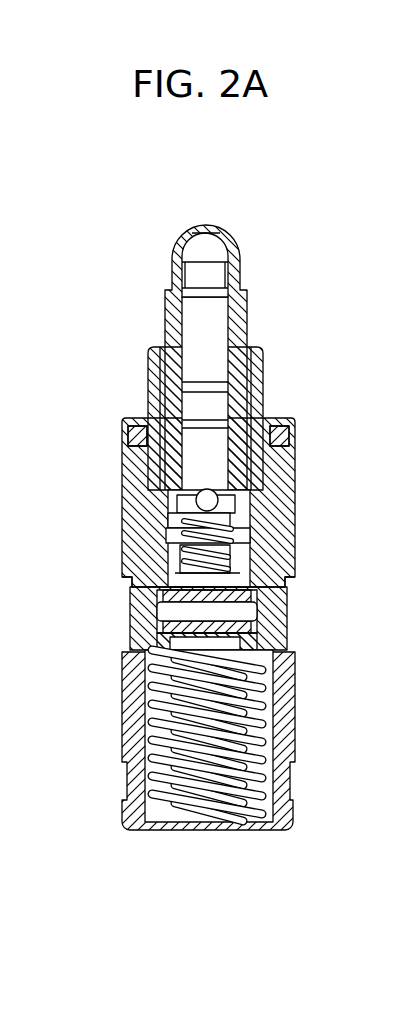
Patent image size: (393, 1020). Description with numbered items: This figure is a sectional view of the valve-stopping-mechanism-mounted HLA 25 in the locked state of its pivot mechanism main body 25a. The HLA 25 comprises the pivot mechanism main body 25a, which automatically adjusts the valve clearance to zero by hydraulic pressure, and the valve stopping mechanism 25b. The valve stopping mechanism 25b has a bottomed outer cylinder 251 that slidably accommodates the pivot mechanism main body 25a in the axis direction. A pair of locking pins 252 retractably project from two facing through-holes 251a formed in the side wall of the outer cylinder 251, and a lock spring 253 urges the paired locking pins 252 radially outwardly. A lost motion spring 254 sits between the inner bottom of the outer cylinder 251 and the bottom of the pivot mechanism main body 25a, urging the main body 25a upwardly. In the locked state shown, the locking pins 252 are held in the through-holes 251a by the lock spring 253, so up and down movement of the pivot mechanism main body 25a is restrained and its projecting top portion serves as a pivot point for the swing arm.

The valve-stopping-mechanism-mounted HLA 25 is at (211, 495).
The pivot mechanism main body 25a is at (253, 304).
The valve stopping mechanism 25b is at (122, 628).
The outer cylinder 251 is at (283, 464).
The through-holes 251a is at (281, 580).
The locking pins 252 is at (289, 598).
The lock spring 253 is at (284, 620).
The lost motion spring 254 is at (256, 737).